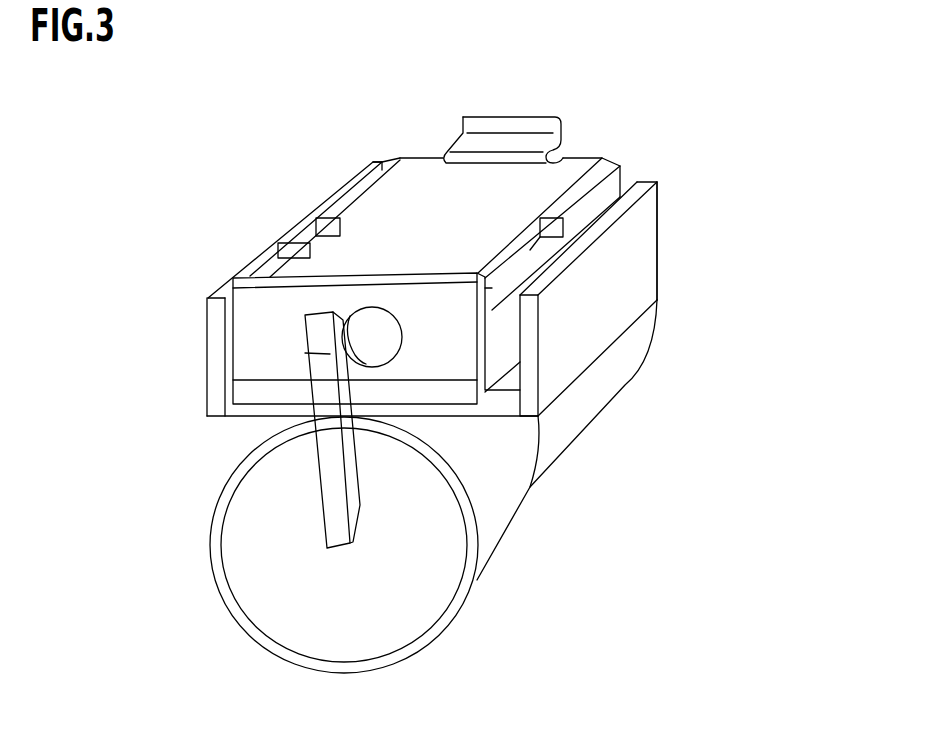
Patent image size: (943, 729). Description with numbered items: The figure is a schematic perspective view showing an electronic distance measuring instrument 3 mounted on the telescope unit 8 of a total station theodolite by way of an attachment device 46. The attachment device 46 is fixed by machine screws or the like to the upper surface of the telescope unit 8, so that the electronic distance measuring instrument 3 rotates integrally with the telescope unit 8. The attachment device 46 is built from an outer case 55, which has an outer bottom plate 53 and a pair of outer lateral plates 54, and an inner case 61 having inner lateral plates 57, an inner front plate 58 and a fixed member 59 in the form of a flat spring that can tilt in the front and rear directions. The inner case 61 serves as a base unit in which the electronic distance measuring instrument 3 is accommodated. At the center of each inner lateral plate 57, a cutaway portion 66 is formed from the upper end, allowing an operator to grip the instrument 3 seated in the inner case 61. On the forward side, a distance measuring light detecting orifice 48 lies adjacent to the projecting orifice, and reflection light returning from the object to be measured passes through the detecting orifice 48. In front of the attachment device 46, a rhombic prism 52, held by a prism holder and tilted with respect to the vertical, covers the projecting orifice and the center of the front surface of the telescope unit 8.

The electronic distance measuring instrument 3 is at (590, 150).
The telescope unit 8 is at (453, 617).
The attachment device 46 is at (298, 162).
The distance measuring light detecting orifice 48 is at (360, 350).
The rhombic prism 52 is at (320, 488).
The outer bottom plate 53 is at (233, 416).
The outer lateral plates 54 is at (252, 256).
The outer case 55 is at (657, 215).
The inner lateral plates 57 is at (375, 161).
The inner front plate 58 is at (230, 322).
The fixed member 59 is at (556, 117).
The inner case 61 is at (391, 160).
The cutaway portions 66 is at (320, 224).